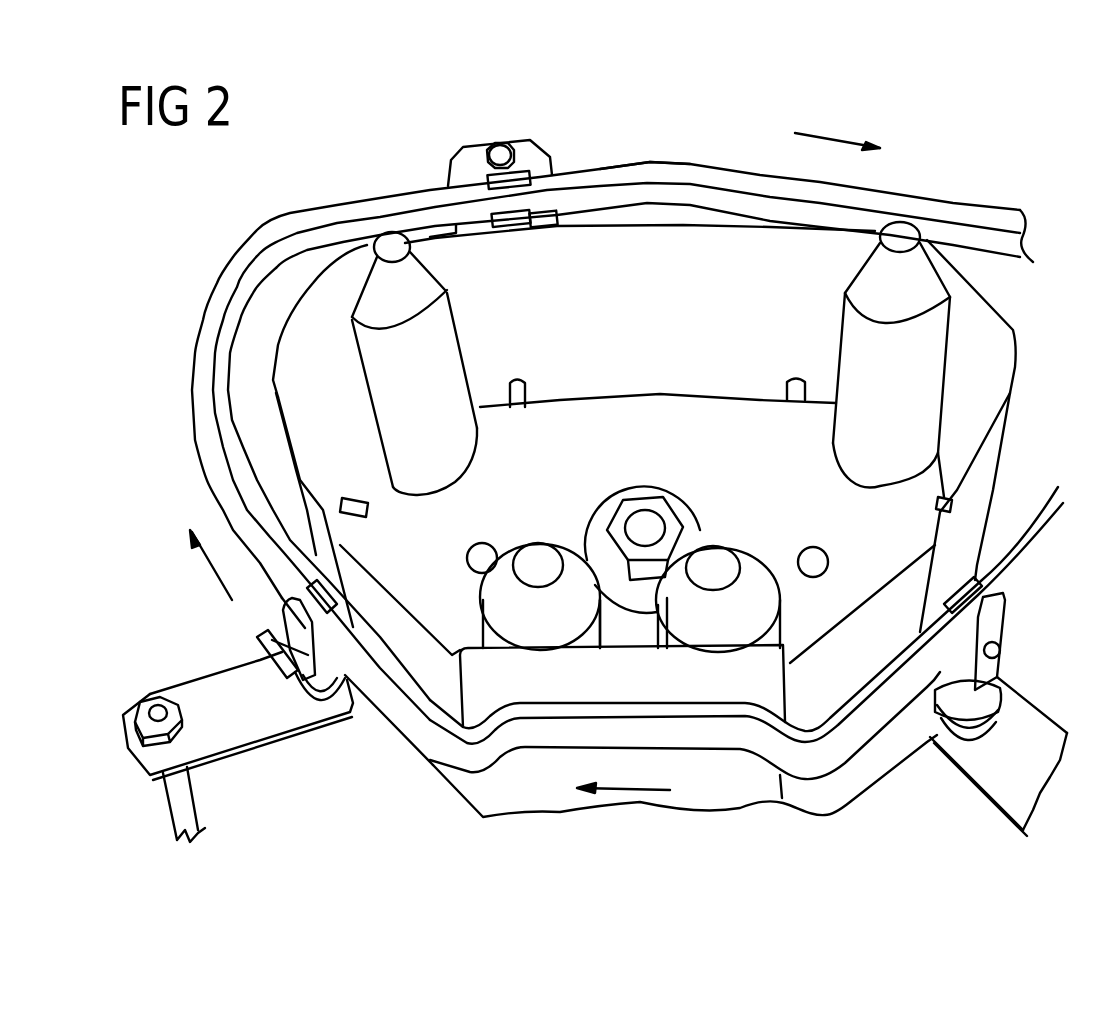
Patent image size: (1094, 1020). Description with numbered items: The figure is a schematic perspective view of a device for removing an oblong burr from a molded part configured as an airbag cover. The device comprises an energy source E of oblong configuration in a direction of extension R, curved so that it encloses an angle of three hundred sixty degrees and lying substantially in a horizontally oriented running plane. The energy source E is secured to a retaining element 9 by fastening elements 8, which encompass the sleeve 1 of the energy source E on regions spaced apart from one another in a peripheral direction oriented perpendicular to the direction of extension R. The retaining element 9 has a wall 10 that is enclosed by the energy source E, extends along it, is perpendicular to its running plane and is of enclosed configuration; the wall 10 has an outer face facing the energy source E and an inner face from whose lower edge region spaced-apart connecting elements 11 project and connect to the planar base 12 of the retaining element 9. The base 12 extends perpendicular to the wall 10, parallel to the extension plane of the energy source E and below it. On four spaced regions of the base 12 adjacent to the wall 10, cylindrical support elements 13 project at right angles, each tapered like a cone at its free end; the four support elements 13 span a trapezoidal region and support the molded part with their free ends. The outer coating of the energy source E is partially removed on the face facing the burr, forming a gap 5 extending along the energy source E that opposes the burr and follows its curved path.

The sleeve 1 is at (747, 173).
The gap 5 is at (428, 207).
The fastening elements 8 is at (522, 177).
The retaining element 9 is at (588, 283).
The wall 10 is at (783, 290).
The connecting elements 11 is at (517, 390).
The base 12 is at (630, 428).
The support element 13 is at (377, 376).
The energy source E is at (648, 163).
The direction of extension R is at (531, 448).